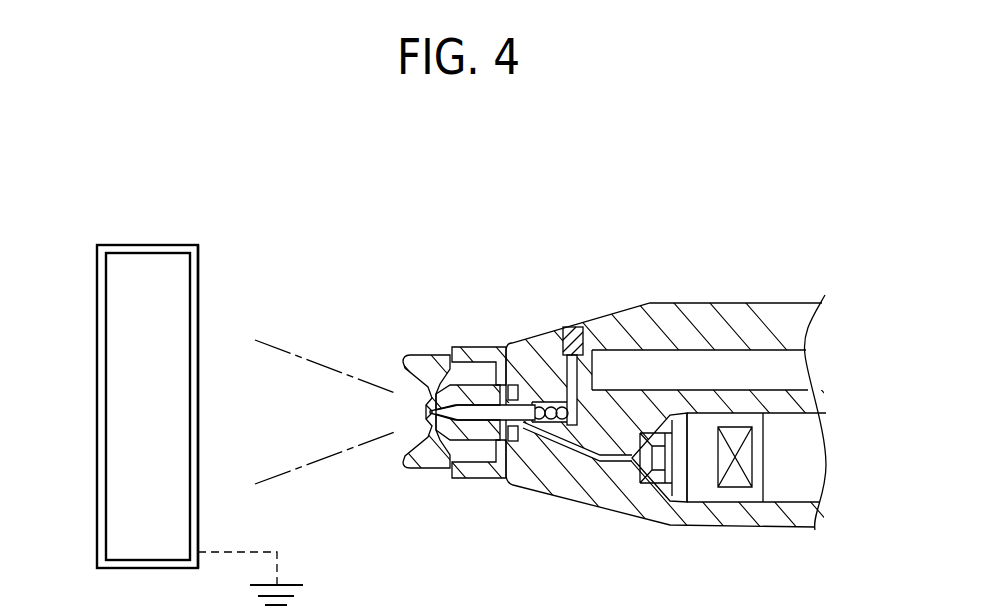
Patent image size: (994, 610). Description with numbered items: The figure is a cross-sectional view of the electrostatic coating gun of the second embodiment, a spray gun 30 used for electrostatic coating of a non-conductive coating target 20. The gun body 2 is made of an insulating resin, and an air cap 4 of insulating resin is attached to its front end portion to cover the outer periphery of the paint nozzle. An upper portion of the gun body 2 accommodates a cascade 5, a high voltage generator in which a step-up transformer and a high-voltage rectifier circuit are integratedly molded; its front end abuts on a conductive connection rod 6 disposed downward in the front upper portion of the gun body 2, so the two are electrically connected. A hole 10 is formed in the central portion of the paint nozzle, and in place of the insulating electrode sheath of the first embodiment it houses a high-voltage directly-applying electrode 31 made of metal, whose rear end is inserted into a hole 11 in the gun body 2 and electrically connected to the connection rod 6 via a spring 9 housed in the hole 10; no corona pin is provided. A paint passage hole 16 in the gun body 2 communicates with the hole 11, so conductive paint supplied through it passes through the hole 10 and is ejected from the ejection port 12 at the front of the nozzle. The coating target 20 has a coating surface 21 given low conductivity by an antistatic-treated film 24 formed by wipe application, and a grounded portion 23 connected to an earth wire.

The gun body 2 is at (770, 303).
The air cap 4 is at (423, 352).
The cascade 5 is at (713, 362).
The connection rod 6 is at (547, 400).
The spring 9 is at (540, 402).
The hole 10 is at (455, 350).
The hole 11 is at (512, 443).
The ejection port 12 is at (425, 414).
The paint passage hole 16 is at (616, 462).
The non-conductive coating target 20 is at (176, 277).
The coating surface 21 is at (190, 308).
The grounded portion 23 is at (198, 551).
The antistatic-treated film 24 is at (200, 402).
The spray gun 30 is at (793, 194).
The high-voltage directly-applying electrode 31 is at (417, 440).